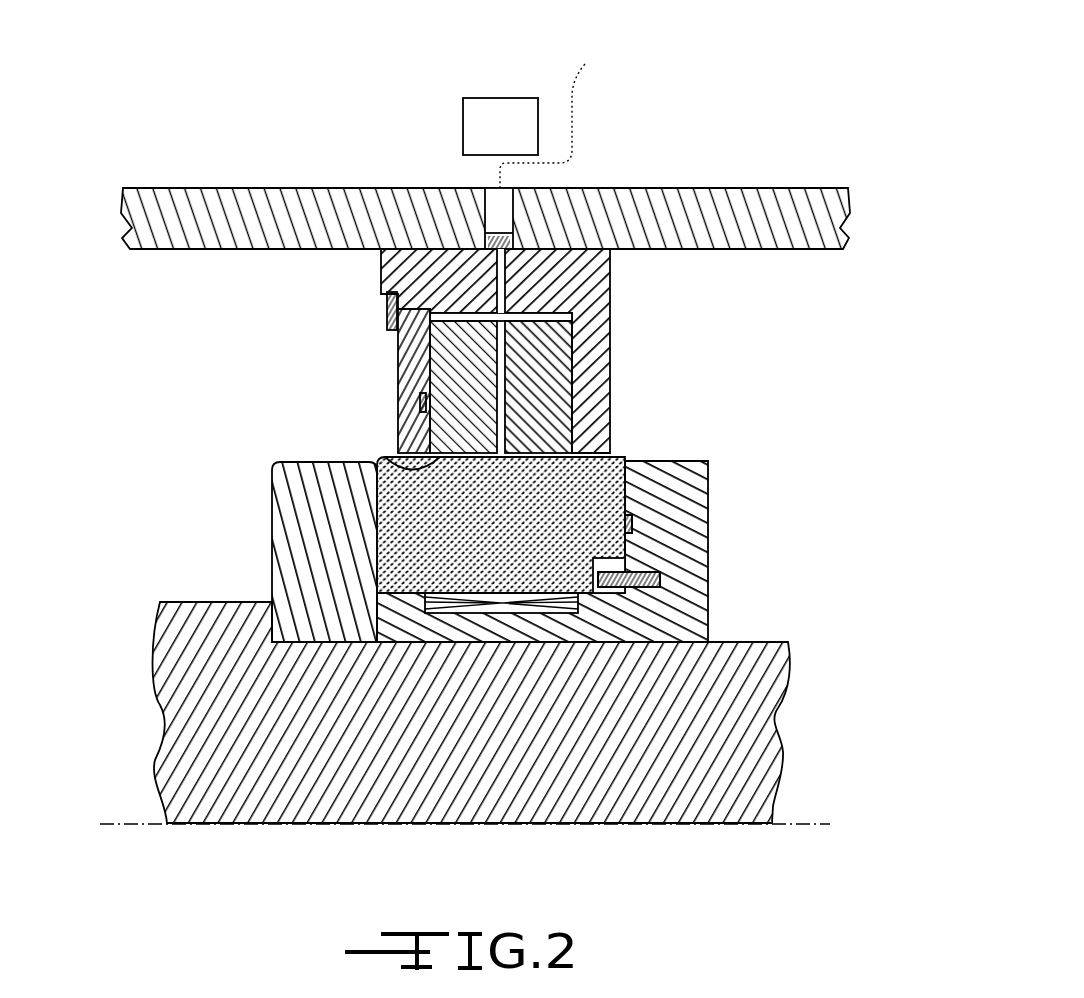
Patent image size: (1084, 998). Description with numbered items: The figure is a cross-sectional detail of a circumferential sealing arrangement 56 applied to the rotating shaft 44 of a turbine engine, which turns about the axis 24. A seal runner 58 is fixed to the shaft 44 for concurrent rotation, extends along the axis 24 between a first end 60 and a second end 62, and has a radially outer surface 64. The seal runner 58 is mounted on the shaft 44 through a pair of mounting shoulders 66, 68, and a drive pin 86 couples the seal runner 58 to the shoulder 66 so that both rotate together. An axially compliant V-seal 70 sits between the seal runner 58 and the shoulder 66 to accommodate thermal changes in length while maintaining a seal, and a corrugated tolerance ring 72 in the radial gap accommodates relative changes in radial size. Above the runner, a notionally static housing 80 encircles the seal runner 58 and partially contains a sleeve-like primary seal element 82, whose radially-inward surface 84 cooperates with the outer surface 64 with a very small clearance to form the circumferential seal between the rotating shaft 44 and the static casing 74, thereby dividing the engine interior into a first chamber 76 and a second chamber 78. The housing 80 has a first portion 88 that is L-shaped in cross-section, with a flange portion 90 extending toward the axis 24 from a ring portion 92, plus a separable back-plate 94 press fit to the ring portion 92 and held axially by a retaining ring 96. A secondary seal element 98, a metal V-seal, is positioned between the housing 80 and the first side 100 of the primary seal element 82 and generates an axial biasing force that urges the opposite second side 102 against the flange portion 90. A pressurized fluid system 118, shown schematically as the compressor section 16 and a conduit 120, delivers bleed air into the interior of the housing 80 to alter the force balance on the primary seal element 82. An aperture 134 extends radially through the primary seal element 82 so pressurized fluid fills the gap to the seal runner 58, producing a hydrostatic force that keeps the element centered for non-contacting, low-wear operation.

The compressor section 16 is at (487, 139).
The axis 24 is at (790, 827).
The shaft 44 is at (208, 721).
The circumferential sealing arrangement 56 is at (730, 335).
The seal runner 58 is at (479, 530).
The first end 60 is at (630, 493).
The second end 62 is at (375, 487).
The radially outer surface 64 is at (597, 446).
The mounting shoulder 66 is at (683, 598).
The mounting shoulder 68 is at (288, 548).
The V-seal 70 is at (648, 522).
The corrugated tolerance ring 72 is at (480, 613).
The casing 74 is at (720, 200).
The first chamber 76 is at (651, 284).
The second chamber 78 is at (158, 284).
The housing 80 is at (408, 235).
The primary seal element 82 is at (448, 353).
The radially-inward surface 84 is at (382, 458).
The drive pin 86 is at (660, 580).
The first portion 88 is at (583, 230).
The flange portion 90 is at (597, 386).
The ring portion 92 is at (548, 288).
The back-plate 94 is at (407, 342).
The retaining ring 96 is at (386, 318).
The secondary seal element 98 is at (421, 398).
The first side 100 is at (418, 421).
The second side 102 is at (610, 336).
The pressurized fluid system 118 is at (515, 84).
The conduit 120 is at (564, 117).
The aperture 134 is at (502, 405).